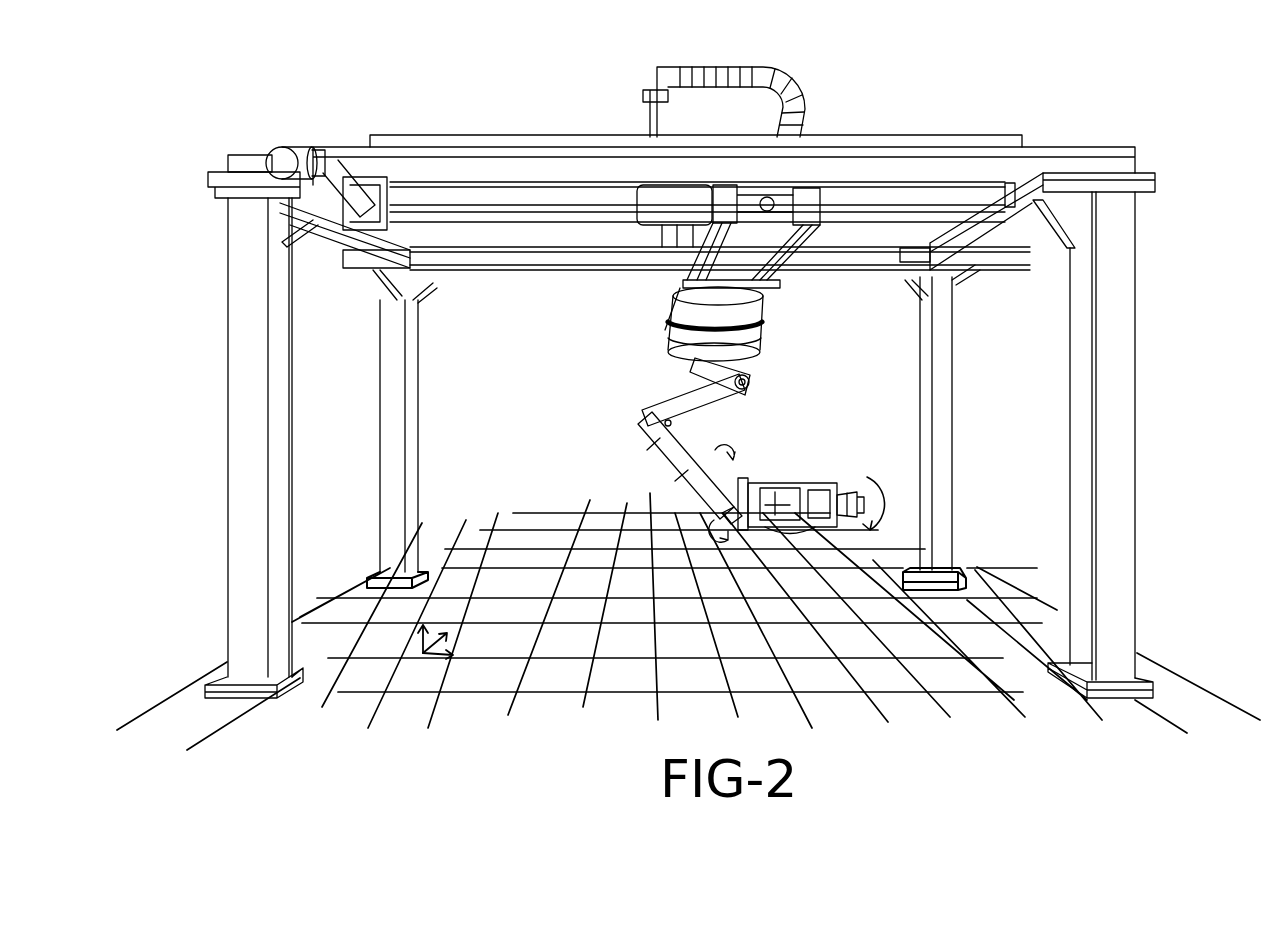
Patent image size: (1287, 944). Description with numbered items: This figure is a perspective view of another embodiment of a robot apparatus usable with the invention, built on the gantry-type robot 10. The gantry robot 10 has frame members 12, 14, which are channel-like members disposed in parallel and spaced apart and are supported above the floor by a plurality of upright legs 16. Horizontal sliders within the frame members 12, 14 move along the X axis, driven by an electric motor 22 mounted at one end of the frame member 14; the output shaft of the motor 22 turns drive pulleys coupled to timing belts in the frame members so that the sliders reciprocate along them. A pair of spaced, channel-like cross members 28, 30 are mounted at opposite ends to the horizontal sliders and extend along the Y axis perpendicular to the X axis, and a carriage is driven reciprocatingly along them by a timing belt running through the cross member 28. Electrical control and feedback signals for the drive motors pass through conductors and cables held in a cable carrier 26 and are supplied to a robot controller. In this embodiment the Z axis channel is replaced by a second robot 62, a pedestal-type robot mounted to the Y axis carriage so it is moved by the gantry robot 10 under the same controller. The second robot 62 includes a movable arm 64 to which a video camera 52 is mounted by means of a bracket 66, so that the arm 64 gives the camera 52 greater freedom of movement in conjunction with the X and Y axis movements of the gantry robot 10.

The gantry-type robot 10 is at (1005, 50).
The frame member 12 is at (495, 255).
The frame member 14 is at (497, 100).
The upright legs 16 is at (245, 478).
The electric motor 22 is at (280, 163).
The cable carrier 26 is at (793, 92).
The cross member 28 is at (725, 262).
The cross member 30 is at (683, 282).
The video camera 52 is at (800, 480).
The second robot 62 is at (650, 357).
The movable arm 64 is at (687, 487).
The bracket 66 is at (777, 537).